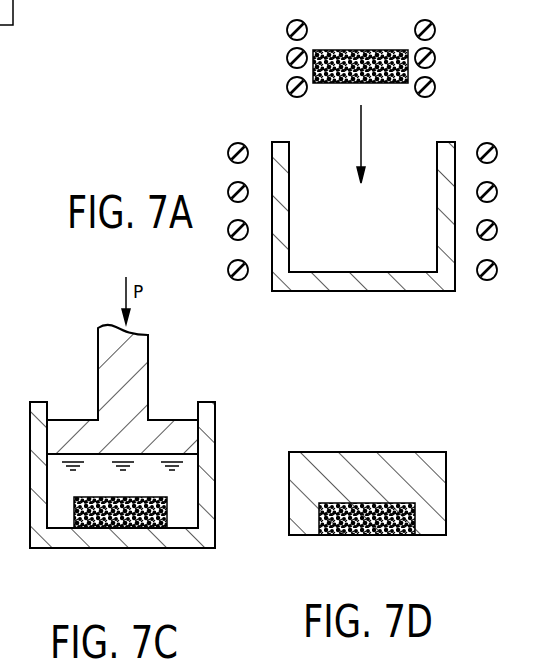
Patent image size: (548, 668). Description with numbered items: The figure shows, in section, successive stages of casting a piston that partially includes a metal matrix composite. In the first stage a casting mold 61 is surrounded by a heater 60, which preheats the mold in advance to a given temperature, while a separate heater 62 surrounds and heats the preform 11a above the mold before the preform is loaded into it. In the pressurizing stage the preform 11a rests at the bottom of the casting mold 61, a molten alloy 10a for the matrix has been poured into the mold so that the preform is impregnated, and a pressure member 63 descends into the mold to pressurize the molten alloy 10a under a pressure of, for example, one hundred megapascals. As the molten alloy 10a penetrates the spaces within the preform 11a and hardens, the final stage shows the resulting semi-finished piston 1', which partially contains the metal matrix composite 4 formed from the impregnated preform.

In FIG. 7A, the preform 11a is at (361, 50).
In FIG. 7C, the preform 11a is at (153, 496).
In FIG. 7A, the heater 62 is at (436, 60).
In FIG. 7A, the casting mold 61 is at (352, 282).
In FIG. 7C, the casting mold 61 is at (110, 540).
In FIG. 7A, the heater 60 is at (487, 281).
In FIG. 7C, the pressure member 63 is at (148, 368).
In FIG. 7C, the molten alloy 10a is at (80, 457).
In FIG. 7D, the semi-finished piston 1' is at (398, 493).
In FIG. 7D, the metal matrix composite 4 is at (400, 512).